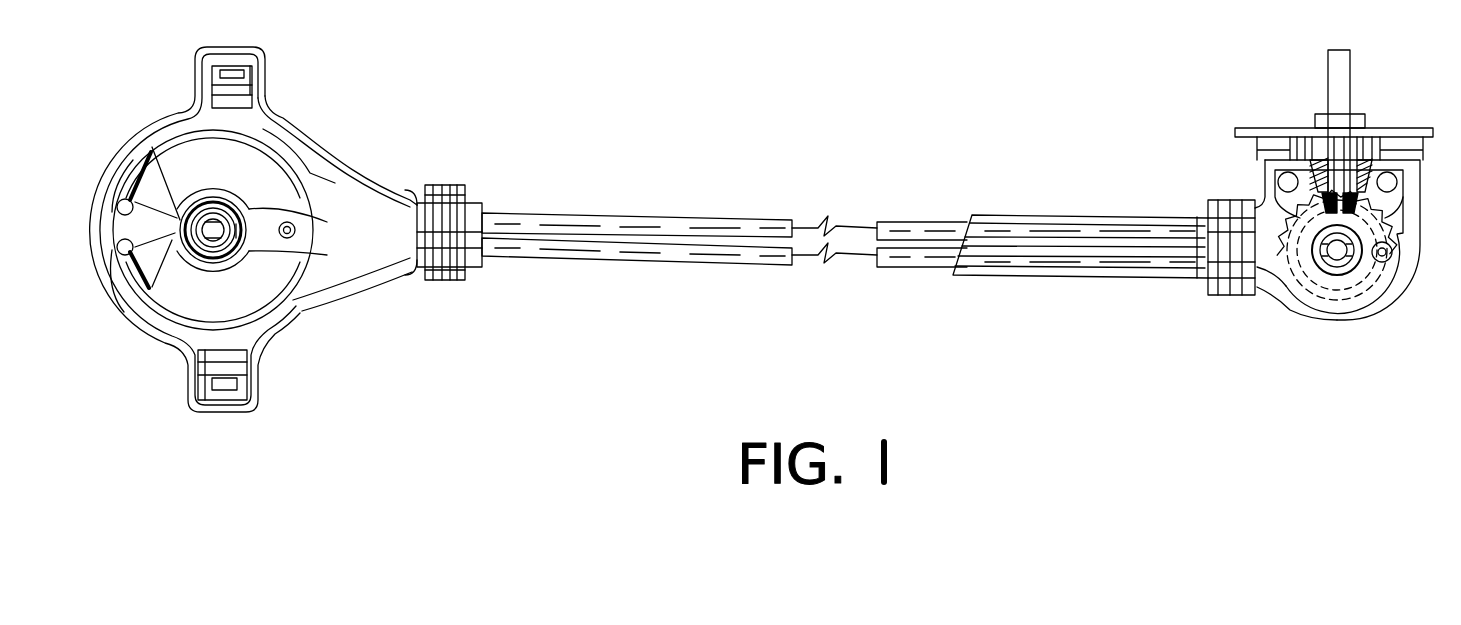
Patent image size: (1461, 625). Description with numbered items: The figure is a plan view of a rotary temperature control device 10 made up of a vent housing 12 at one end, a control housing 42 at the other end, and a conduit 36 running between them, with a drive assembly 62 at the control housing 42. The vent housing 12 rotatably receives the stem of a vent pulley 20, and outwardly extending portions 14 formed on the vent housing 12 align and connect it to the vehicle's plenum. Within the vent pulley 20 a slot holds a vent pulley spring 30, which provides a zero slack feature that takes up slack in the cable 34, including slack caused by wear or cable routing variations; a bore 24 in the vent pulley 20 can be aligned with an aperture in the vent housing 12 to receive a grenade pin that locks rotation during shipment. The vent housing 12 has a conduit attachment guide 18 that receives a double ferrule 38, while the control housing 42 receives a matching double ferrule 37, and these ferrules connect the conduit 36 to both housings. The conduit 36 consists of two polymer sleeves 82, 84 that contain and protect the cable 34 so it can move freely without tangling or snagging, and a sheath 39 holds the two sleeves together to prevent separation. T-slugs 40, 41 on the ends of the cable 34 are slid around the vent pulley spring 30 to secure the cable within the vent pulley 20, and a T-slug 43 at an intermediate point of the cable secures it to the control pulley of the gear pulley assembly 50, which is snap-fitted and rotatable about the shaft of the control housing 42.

The rotary temperature control device 10 is at (768, 48).
The vent housing 12 is at (289, 108).
The outwardly extending portions 14 is at (246, 48).
The conduit attachment guide 18 is at (472, 183).
The vent pulley 20 is at (258, 297).
The bore 24 is at (295, 237).
The vent pulley spring 30 is at (162, 191).
The cable 34 is at (333, 172).
The conduit 36 is at (695, 162).
The double ferrule 37 is at (1227, 227).
The double ferrule 38 is at (447, 187).
The sheath 39 is at (985, 215).
The T-slug 40 is at (126, 152).
The T-slug 41 is at (123, 258).
The control housing 42 is at (1382, 319).
The T-slug 43 is at (1393, 250).
The gear pulley assembly 50 is at (1338, 290).
The drive assembly 62 is at (1302, 112).
The polymer sleeve 82 is at (727, 220).
The polymer sleeve 84 is at (612, 263).